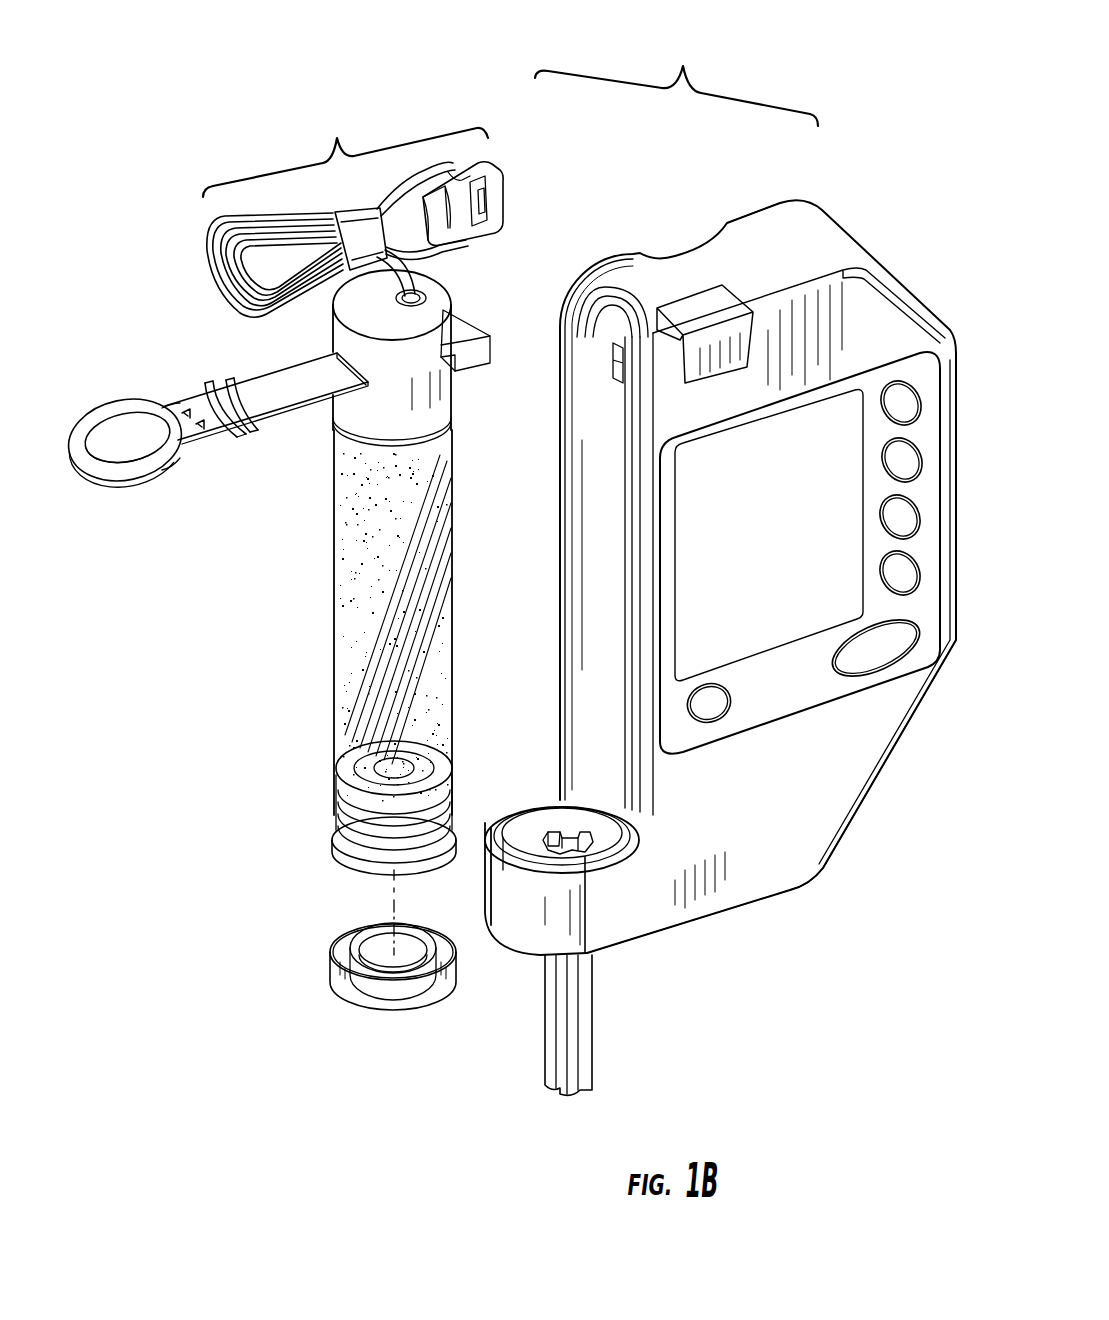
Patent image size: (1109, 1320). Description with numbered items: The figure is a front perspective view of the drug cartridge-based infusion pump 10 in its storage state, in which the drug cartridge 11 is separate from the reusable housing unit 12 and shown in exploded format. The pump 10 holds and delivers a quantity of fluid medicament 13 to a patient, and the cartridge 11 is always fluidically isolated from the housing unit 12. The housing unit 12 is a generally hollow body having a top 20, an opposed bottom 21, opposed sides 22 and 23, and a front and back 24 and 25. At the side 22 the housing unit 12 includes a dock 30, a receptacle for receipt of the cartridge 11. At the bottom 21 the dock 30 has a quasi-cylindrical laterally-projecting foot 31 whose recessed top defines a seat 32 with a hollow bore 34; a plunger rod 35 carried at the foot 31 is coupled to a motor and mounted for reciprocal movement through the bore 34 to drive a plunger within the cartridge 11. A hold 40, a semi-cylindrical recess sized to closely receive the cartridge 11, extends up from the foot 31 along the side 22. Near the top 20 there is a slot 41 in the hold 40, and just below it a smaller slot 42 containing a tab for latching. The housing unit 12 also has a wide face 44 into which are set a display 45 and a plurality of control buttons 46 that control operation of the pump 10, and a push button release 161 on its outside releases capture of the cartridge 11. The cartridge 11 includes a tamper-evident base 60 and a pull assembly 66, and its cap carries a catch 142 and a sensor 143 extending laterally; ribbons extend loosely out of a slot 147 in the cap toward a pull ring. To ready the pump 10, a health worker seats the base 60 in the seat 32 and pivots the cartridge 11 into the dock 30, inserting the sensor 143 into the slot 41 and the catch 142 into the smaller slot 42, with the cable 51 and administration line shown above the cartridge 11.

The drug cartridge-based infusion pump 10 is at (676, 80).
The drug cartridge 11 is at (345, 147).
The housing unit 12 is at (862, 762).
The fluid medicament 13 is at (358, 630).
The top 20 is at (748, 228).
The bottom 21 is at (740, 890).
The side 22 is at (585, 516).
The side 23 is at (957, 420).
The front 24 is at (908, 702).
The back 25 is at (568, 292).
The dock 30 is at (552, 452).
The foot 31 is at (523, 930).
The seat 32 is at (538, 820).
The bore 34 is at (580, 830).
The plunger rod 35 is at (583, 1033).
The hold 40 is at (606, 437).
The slot 41 is at (605, 315).
The smaller slot 42 is at (605, 368).
The wide face 44 is at (772, 805).
The display 45 is at (765, 632).
The control buttons 46 is at (898, 572).
The cable 51 is at (337, 248).
The tamper-evident base 60 is at (337, 992).
The pull assembly 66 is at (232, 450).
The catch 142 is at (490, 340).
The sensor 143 is at (467, 303).
The slot 147 is at (327, 370).
The push button release 161 is at (708, 305).